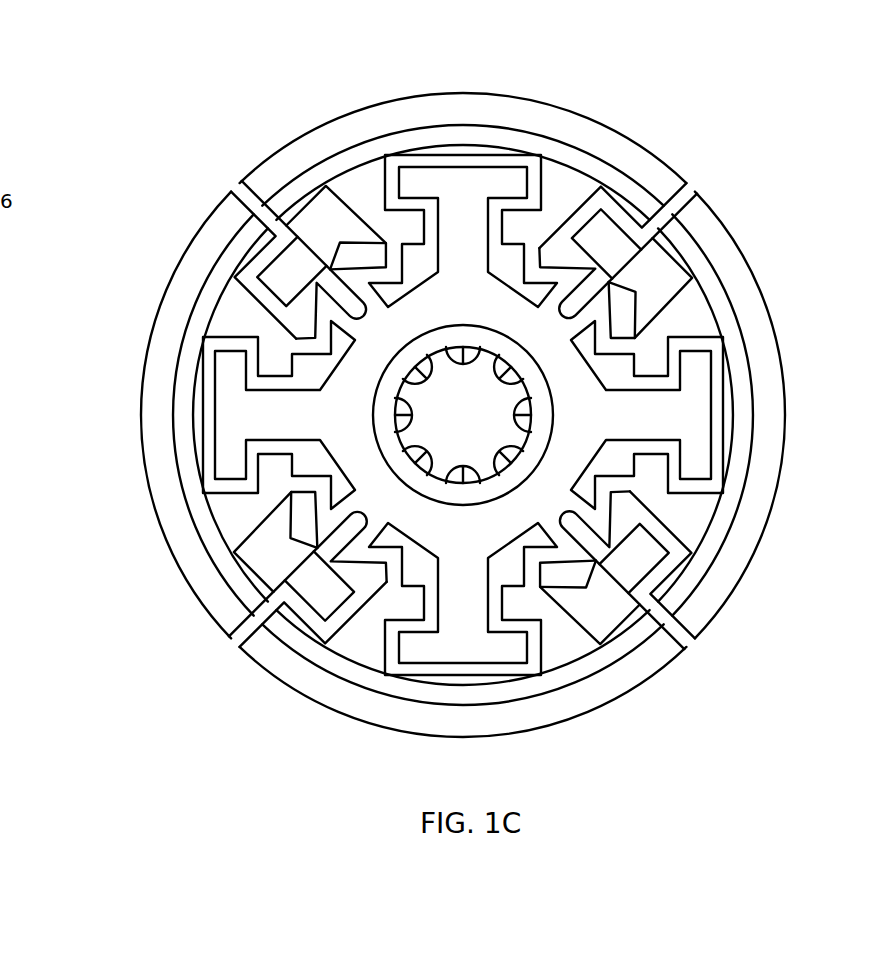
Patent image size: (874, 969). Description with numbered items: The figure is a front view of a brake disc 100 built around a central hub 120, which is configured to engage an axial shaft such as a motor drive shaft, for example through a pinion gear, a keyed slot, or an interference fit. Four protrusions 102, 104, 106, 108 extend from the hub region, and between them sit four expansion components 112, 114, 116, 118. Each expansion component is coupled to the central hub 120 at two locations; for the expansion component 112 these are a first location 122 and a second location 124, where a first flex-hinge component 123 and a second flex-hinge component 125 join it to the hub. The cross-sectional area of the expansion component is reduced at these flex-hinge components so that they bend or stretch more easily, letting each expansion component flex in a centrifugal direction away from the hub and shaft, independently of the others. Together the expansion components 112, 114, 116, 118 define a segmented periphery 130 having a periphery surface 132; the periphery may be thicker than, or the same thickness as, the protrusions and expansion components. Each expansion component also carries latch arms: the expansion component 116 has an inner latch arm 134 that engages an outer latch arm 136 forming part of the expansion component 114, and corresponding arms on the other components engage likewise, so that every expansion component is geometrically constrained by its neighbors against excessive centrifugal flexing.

The brake disc 100 is at (700, 110).
The protrusion 102 is at (668, 415).
The protrusion 104 is at (460, 640).
The protrusion 106 is at (258, 418).
The protrusion 108 is at (465, 222).
The expansion component 112 is at (686, 252).
The expansion component 114 is at (680, 606).
The expansion component 116 is at (219, 623).
The expansion component 118 is at (335, 222).
The central hub 120 is at (390, 440).
The first location 122 is at (607, 232).
The first flex-hinge component 123 is at (662, 290).
The second location 124 is at (646, 559).
The second flex-hinge component 125 is at (590, 618).
The segmented periphery 130 is at (495, 93).
The periphery surface 132 is at (0, 765).
The inner latch arm 134 is at (319, 585).
The outer latch arm 136 is at (313, 614).